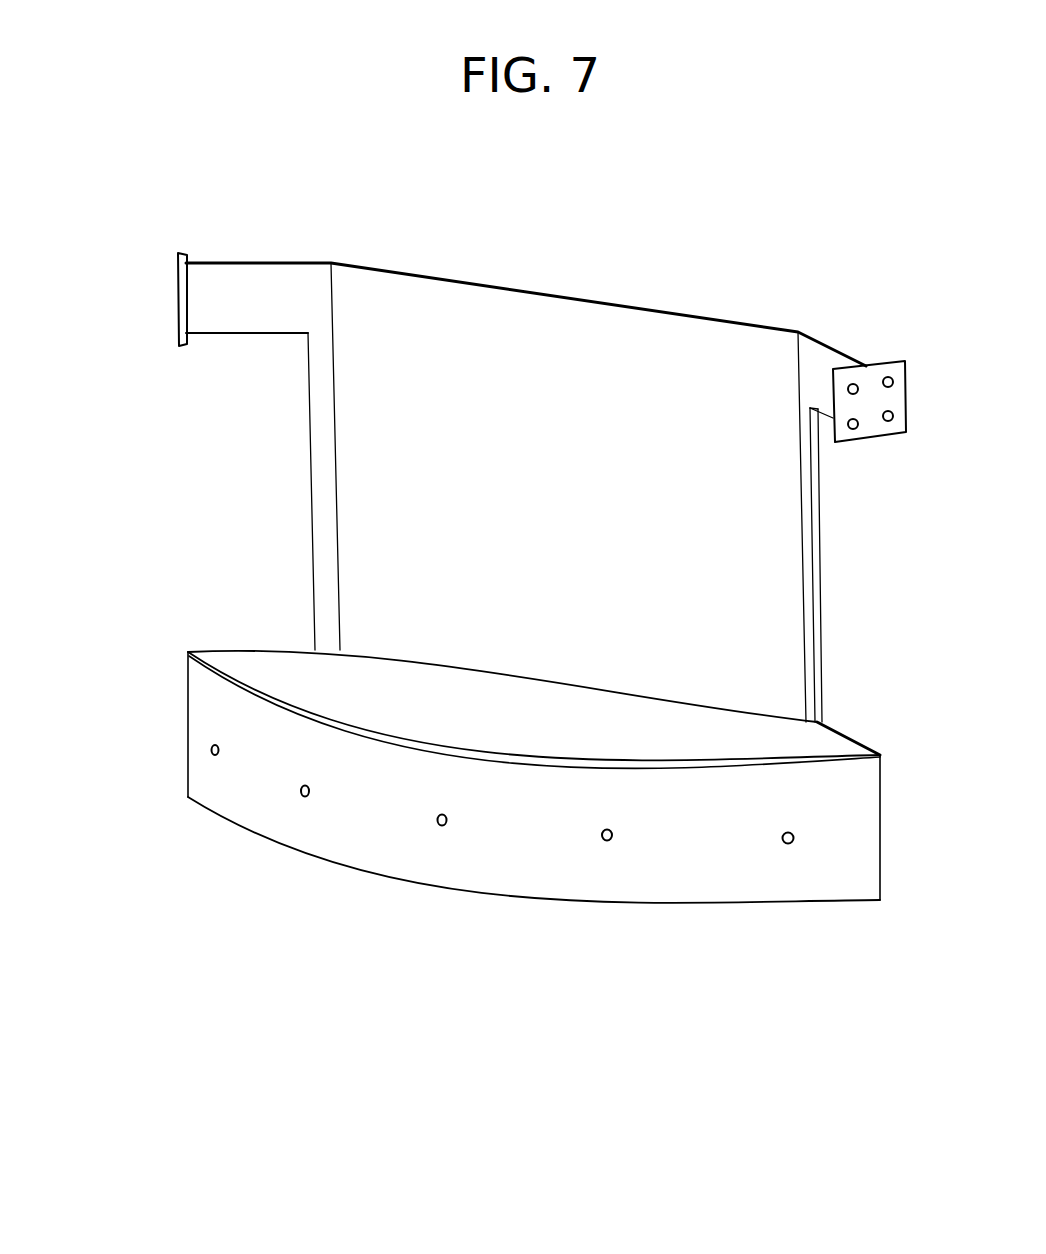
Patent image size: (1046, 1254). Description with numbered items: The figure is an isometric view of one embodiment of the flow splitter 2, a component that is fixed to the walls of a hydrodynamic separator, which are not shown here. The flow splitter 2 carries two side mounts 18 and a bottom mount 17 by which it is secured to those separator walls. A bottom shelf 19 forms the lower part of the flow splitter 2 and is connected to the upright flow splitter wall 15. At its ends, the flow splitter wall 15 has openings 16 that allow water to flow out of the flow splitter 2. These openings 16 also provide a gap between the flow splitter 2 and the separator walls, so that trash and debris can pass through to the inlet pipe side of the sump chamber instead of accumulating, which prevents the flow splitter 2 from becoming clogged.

The flow splitter 2 is at (881, 935).
The flow splitter wall 15 is at (403, 408).
The openings 16 is at (238, 525).
The bottom mount 17 is at (305, 819).
The side mounts 18 is at (880, 363).
The bottom shelf 19 is at (792, 742).